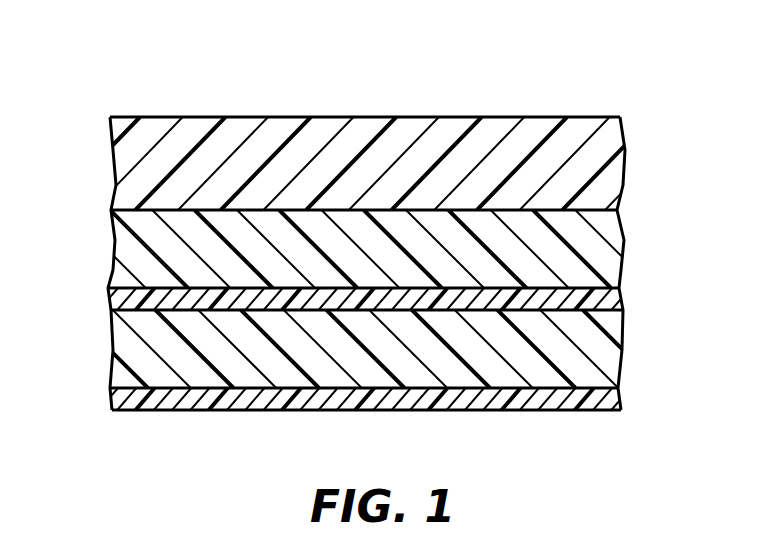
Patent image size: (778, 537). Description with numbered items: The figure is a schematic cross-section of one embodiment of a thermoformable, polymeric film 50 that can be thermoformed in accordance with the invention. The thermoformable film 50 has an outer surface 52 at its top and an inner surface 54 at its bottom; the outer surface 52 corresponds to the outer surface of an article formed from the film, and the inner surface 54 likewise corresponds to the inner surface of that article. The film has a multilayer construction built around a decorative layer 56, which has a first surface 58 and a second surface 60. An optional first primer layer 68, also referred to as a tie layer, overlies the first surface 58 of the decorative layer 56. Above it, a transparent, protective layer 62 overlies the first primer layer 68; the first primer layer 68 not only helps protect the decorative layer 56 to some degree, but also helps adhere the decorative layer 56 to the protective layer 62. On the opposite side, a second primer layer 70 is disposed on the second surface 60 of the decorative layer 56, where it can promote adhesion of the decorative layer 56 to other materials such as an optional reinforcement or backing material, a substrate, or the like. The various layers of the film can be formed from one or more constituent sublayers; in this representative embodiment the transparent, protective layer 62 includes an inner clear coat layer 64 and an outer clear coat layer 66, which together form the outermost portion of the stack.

The thermoformable film 50 is at (457, 77).
The outer surface 52 is at (550, 115).
The inner surface 54 is at (577, 407).
The decorative layer 56 is at (130, 350).
The first surface 58 is at (137, 290).
The second surface 60 is at (162, 400).
The transparent, protective layer 62 is at (640, 115).
The inner clear coat layer 64 is at (118, 213).
The outer clear coat layer 66 is at (250, 127).
The first primer layer 68 is at (621, 299).
The second primer layer 70 is at (237, 405).